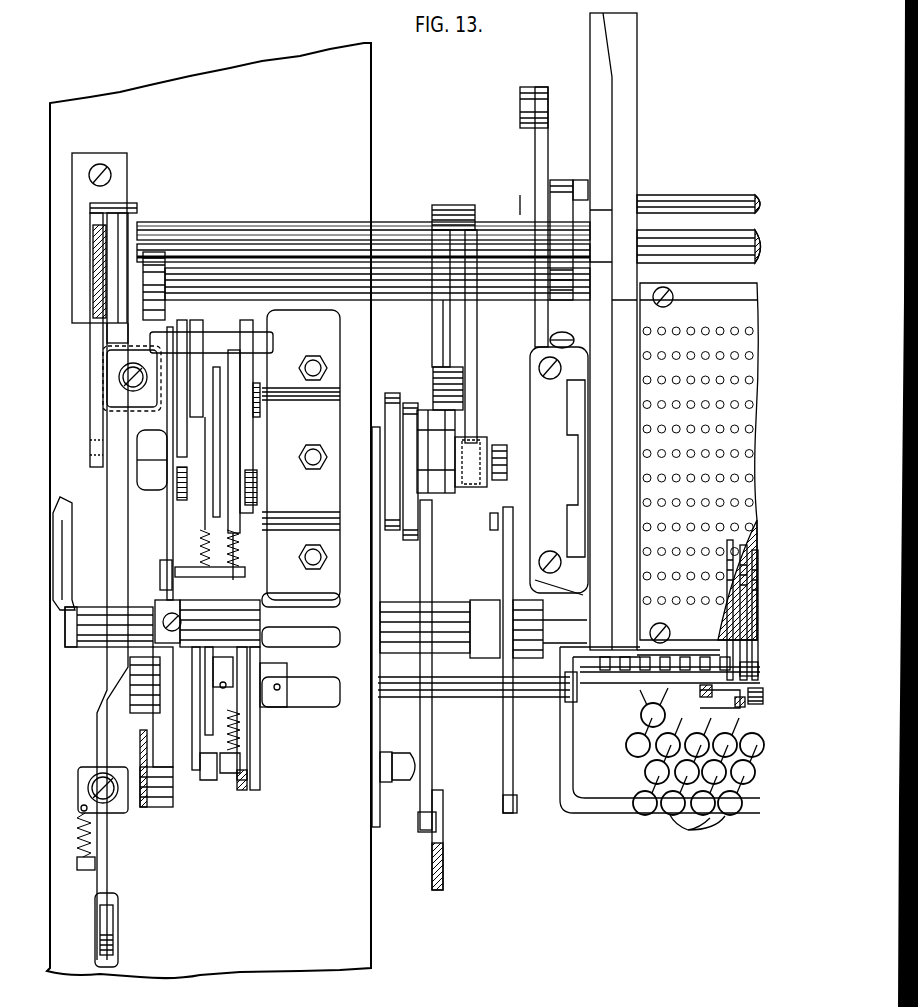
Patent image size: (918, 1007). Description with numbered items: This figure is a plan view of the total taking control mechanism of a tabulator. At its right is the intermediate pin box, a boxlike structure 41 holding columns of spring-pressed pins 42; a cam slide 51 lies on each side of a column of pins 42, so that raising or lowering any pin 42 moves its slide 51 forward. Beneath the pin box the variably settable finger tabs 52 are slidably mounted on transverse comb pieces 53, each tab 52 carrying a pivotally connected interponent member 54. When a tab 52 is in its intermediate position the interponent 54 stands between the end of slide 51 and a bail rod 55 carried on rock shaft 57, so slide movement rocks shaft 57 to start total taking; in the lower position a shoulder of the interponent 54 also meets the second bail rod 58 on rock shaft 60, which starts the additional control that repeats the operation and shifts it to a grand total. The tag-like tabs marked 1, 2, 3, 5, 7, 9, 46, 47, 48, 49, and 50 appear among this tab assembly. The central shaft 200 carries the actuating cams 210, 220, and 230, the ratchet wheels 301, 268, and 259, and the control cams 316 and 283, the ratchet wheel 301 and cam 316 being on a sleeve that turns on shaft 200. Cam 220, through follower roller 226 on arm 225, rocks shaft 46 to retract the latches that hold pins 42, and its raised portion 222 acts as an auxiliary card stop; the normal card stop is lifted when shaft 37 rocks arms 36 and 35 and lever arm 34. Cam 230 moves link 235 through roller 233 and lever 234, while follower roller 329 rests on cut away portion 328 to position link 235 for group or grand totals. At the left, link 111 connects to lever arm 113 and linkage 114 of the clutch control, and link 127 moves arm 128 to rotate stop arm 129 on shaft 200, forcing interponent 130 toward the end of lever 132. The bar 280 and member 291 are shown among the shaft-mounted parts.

The key lever tag 1 is at (639, 737).
The key lever tag 2 is at (654, 707).
The key lever tag 3 is at (669, 737).
The key lever tag 5 is at (698, 737).
The key lever tag 7 is at (726, 737).
The key lever tag 9 is at (752, 745).
The lever arm 34 is at (497, 545).
The arm 35 is at (525, 108).
The arm 36 is at (540, 156).
The shaft 37 is at (398, 300).
The boxlike structure 41 is at (755, 470).
The spring-pressed pins 42 is at (752, 556).
The shaft 46 is at (333, 215).
The key lever tag 47 is at (658, 764).
The key lever tag 48 is at (674, 795).
The key lever tag 49 is at (688, 764).
The key lever tag 50 is at (704, 795).
The cam slides 51 is at (752, 645).
The finger tabs 52 is at (707, 811).
The comb pieces 53 is at (590, 702).
The interponent member 54 is at (753, 678).
The bail rod 55 is at (760, 697).
The rock shaft 57 is at (740, 712).
The second bail rod 58 is at (745, 706).
The rock shaft 60 is at (440, 695).
The link 111 is at (100, 228).
The lever arm 113 is at (108, 527).
The linkage 114 is at (113, 938).
The link 127 is at (63, 542).
The arm 128 is at (92, 635).
The stop arm 129 is at (100, 655).
The interponent 130 is at (90, 396).
The lever 132 is at (122, 747).
The shaft 200 is at (486, 450).
The actuating cam 210 is at (393, 393).
The actuating cam 220 is at (450, 442).
The raised portion 222 is at (455, 418).
The arm 225 is at (437, 248).
The follower roller 226 is at (452, 387).
The actuating cam 230 is at (410, 405).
The roller 233 is at (417, 535).
The lever 234 is at (430, 578).
The link 235 is at (445, 882).
The ratchet wheel 259 is at (158, 460).
The ratchet wheel 268 is at (205, 400).
The gear 280 is at (130, 663).
The control cam 283 is at (196, 360).
The bar 291 is at (213, 437).
The ratchet wheel 301 is at (236, 462).
The control cam 316 is at (233, 447).
The cut away portion 328 is at (246, 470).
The follower roller 329 is at (252, 488).